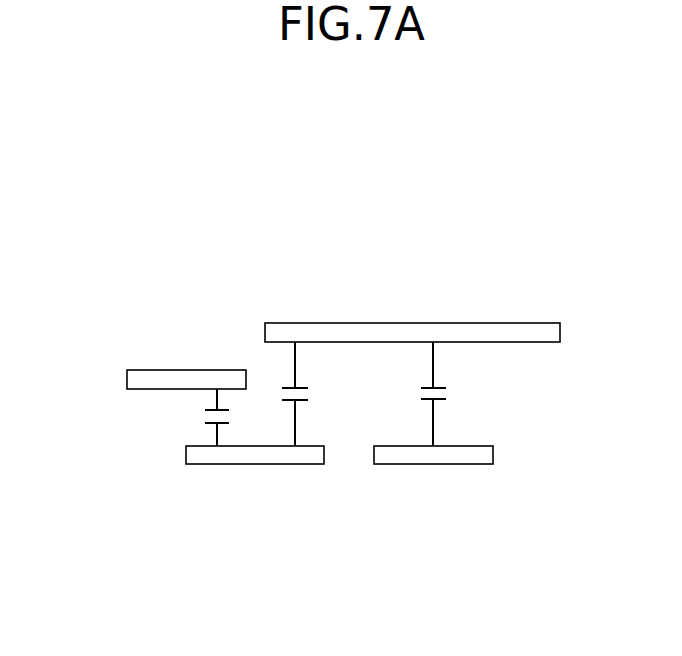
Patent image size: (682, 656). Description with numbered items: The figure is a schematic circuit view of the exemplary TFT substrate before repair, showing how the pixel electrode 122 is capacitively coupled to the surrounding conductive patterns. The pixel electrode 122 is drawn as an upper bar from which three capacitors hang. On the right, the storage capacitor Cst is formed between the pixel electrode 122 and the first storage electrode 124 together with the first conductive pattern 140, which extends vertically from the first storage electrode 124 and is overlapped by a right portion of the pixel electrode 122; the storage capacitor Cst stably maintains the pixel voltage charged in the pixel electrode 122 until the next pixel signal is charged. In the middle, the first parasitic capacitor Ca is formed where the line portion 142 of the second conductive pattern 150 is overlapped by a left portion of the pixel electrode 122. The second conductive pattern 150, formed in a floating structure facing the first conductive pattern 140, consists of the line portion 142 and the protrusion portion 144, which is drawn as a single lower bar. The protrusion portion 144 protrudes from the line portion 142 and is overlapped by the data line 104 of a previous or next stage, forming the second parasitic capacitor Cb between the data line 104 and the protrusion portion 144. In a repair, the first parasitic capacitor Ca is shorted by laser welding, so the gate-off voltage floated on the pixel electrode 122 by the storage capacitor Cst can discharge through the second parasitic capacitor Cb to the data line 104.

The pixel electrode 122 is at (265, 330).
The data line 104 is at (126, 379).
The protrusion portion 144 is at (217, 464).
The line portion 142 is at (295, 464).
The second conductive pattern 150 is at (255, 497).
The first storage electrode 124 is at (505, 456).
The first conductive pattern 140 is at (490, 453).
The first parasitic capacitor Ca is at (312, 376).
The second parasitic capacitor Cb is at (196, 417).
The storage capacitor Cst is at (412, 394).